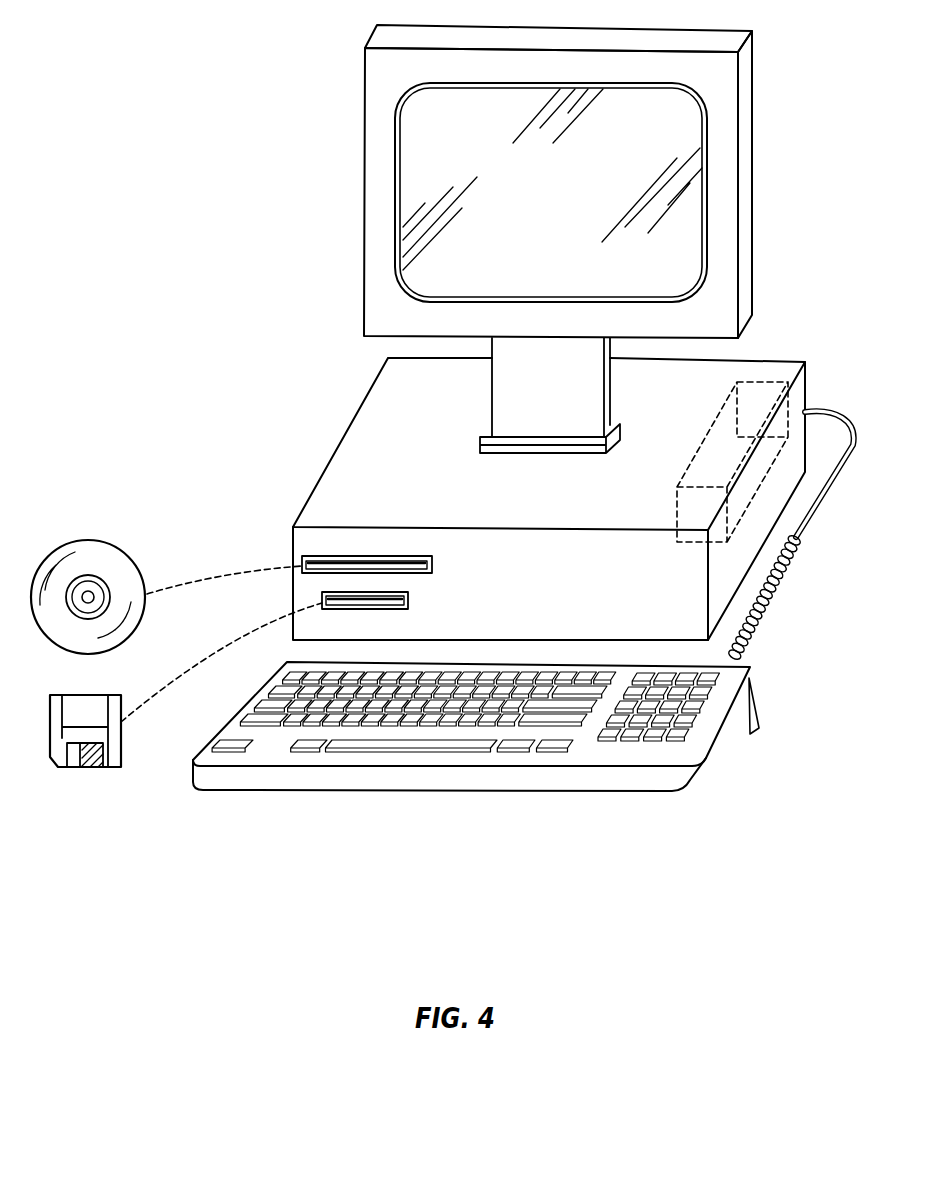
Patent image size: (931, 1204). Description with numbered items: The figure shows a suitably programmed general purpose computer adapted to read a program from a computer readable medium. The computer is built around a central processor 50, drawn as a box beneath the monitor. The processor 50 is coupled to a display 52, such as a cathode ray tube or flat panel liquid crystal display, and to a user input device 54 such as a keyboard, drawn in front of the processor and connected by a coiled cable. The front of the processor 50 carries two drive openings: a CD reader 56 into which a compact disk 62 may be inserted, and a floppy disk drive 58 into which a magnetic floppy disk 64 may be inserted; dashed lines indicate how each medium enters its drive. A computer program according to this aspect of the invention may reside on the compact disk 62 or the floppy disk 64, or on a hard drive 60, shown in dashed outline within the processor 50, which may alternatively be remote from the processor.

The central processor 50 is at (340, 440).
The display 52 is at (743, 208).
The user input device 54 is at (423, 792).
The CD reader 56 is at (432, 564).
The floppy disk drive 58 is at (408, 602).
The hard drive 60 is at (677, 497).
The compact disk 62 is at (88, 540).
The magnetic floppy disk 64 is at (90, 767).